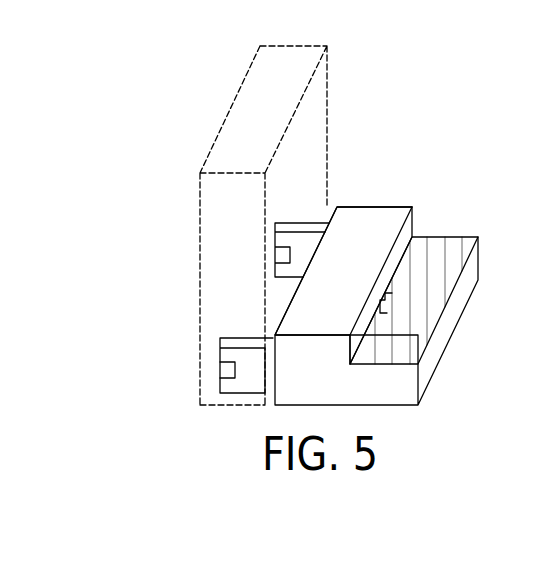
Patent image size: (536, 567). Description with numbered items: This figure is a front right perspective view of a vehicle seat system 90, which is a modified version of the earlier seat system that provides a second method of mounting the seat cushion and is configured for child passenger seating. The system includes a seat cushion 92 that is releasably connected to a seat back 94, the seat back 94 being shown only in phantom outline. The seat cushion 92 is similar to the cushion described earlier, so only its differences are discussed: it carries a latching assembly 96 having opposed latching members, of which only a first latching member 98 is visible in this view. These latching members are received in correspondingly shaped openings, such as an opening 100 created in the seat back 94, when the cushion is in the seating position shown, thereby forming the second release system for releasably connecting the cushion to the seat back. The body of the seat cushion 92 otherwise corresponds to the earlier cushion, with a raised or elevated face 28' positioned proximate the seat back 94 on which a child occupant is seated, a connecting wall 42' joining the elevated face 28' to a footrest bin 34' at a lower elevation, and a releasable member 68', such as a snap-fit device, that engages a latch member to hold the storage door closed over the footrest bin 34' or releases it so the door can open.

The elevated face 28' is at (376, 263).
The seat cushion 92 is at (379, 221).
The connecting wall 42' is at (413, 268).
The footrest bin 34' is at (421, 282).
The releasable member 68' is at (446, 297).
The vehicle seat system 90 is at (440, 182).
The seat back 94 is at (199, 217).
The latching assembly 96 is at (250, 332).
The opening 100 is at (265, 370).
The first latching member 98 is at (249, 379).